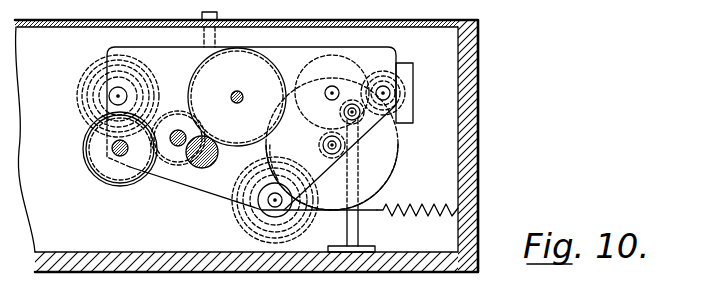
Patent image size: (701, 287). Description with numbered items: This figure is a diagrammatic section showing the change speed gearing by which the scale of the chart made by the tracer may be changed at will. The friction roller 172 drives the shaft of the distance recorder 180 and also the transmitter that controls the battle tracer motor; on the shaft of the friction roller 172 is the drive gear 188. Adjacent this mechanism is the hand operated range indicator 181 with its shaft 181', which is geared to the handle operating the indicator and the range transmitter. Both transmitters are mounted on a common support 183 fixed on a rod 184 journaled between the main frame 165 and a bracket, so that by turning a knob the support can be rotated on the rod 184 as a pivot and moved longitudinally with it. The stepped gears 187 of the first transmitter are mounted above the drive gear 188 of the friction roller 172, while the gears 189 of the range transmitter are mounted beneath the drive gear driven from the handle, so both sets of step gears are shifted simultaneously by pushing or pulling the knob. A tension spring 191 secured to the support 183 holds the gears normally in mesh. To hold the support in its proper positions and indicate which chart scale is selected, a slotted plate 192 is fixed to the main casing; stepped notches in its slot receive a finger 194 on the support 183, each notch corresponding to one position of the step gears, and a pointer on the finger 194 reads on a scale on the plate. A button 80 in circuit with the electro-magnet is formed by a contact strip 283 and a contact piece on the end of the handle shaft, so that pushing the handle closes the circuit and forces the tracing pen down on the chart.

The main frame 165 is at (478, 181).
The common support 183 is at (251, 128).
The slotted plate 192 is at (269, 18).
The finger 194 is at (211, 33).
The stepped gears 187 is at (84, 83).
The friction roller 172 is at (84, 145).
The drive gear 188 is at (93, 177).
The rod 184 is at (201, 158).
The distance recorder 180 is at (303, 88).
The gear 80 is at (341, 112).
The contact strip 283 is at (345, 148).
The gears 189 is at (241, 228).
The tension spring 191 is at (404, 207).
The hand operated range indicator 181 is at (398, 78).
The shaft 181' is at (422, 93).